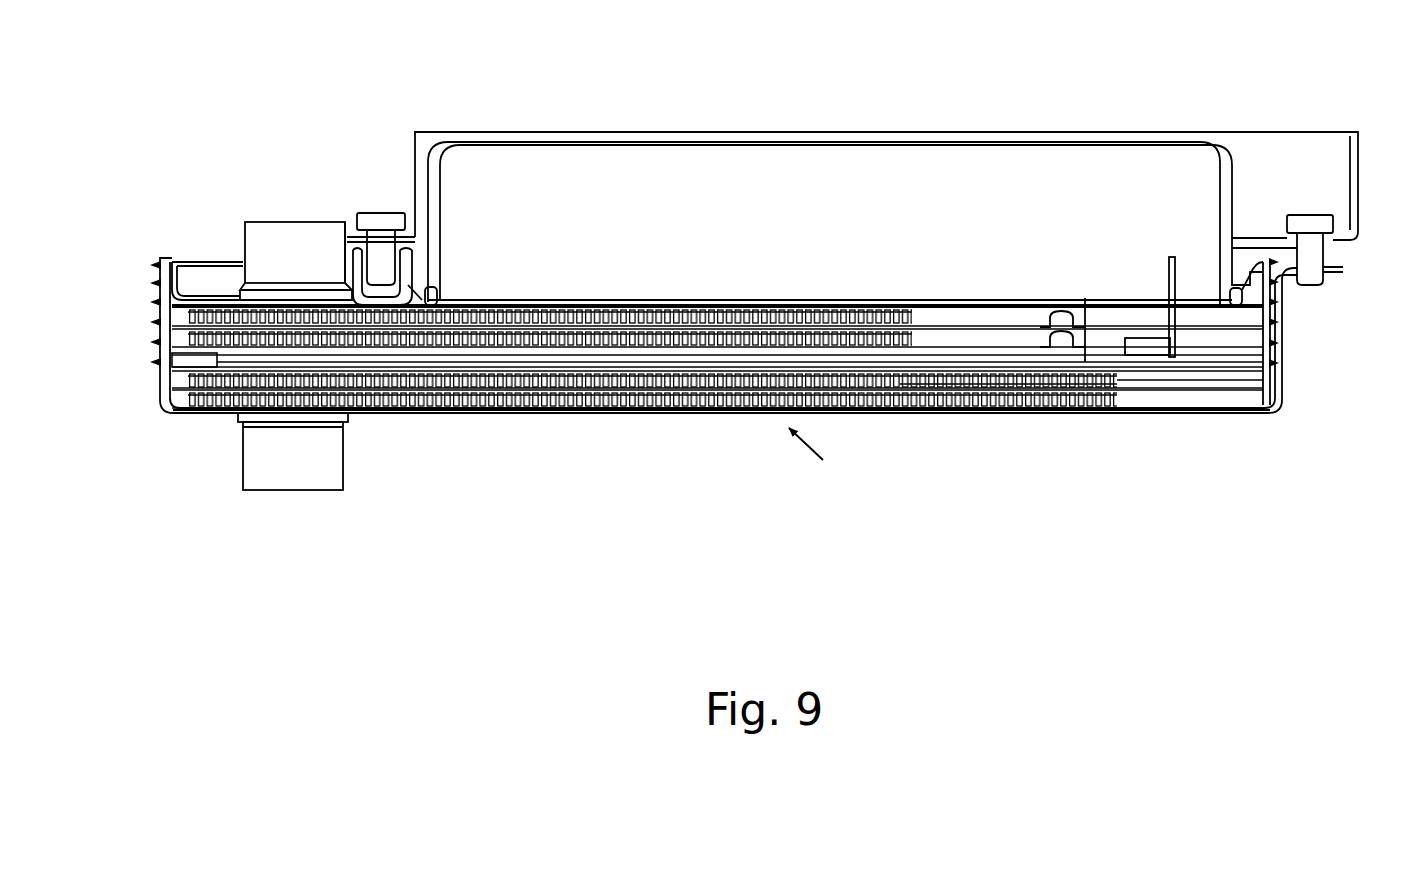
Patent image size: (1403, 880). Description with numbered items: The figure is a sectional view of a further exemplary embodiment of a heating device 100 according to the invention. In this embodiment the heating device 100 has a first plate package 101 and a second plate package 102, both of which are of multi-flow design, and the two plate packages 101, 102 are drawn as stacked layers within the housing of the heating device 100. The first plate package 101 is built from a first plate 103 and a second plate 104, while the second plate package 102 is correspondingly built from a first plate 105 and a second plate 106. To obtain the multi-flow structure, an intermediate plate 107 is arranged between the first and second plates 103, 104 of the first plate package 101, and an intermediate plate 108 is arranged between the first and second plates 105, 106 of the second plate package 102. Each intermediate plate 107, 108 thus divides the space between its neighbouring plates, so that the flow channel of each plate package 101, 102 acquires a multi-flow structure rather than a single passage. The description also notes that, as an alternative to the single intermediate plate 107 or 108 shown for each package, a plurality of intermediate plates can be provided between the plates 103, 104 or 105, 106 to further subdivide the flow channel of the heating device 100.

The heating device 100 is at (772, 108).
The first plate package 101 is at (552, 330).
The second plate package 102 is at (679, 396).
The first plate 103 is at (446, 352).
The second plate 104 is at (509, 352).
The first plate 105 is at (889, 375).
The second plate 106 is at (968, 376).
The intermediate plate 107 is at (399, 340).
The intermediate plate 108 is at (1059, 378).